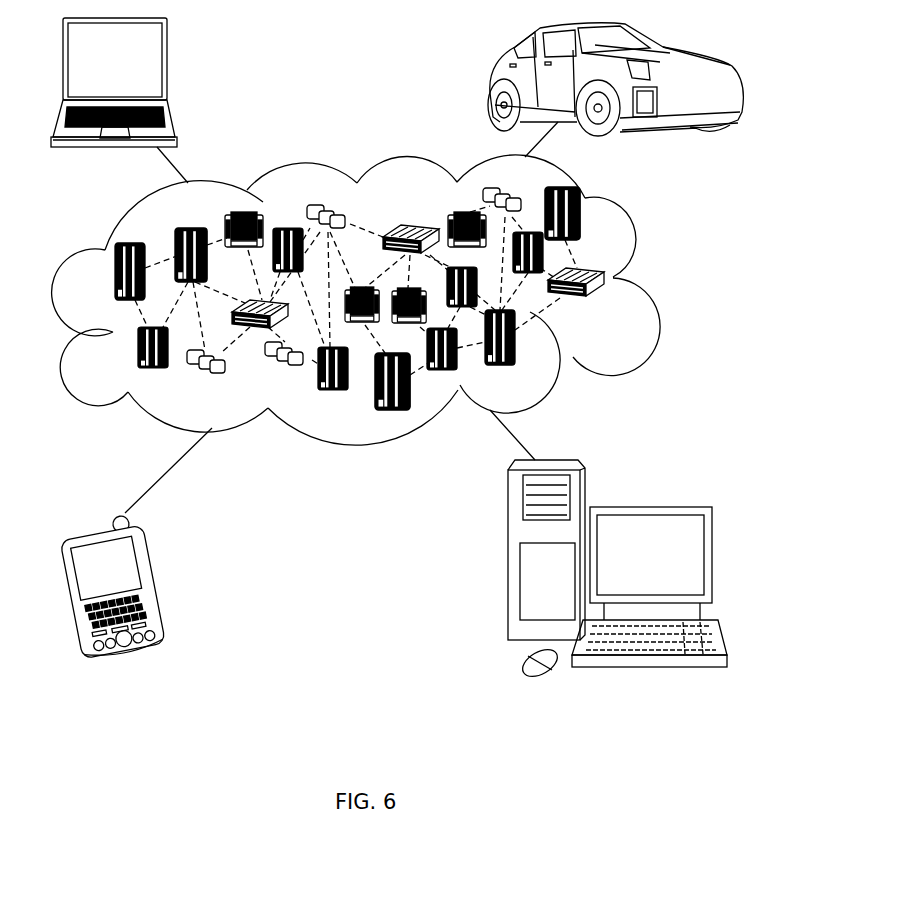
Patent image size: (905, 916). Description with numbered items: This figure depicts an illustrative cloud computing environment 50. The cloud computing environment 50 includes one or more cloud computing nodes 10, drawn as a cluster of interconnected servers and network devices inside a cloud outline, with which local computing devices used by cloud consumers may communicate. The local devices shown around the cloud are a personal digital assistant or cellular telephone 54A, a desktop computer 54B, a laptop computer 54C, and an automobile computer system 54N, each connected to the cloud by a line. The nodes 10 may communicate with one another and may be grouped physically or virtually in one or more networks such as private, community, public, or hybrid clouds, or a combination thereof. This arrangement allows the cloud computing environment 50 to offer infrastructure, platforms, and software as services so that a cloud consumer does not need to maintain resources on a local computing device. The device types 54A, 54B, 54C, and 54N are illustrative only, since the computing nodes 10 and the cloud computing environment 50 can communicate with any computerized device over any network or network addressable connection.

The cloud computing nodes 10 is at (612, 306).
The cloud computing environment 50 is at (648, 278).
The personal digital assistant or cellular telephone 54A is at (157, 578).
The desktop computer 54B is at (650, 505).
The laptop computer 54C is at (168, 68).
The automobile computer system 54N is at (493, 80).